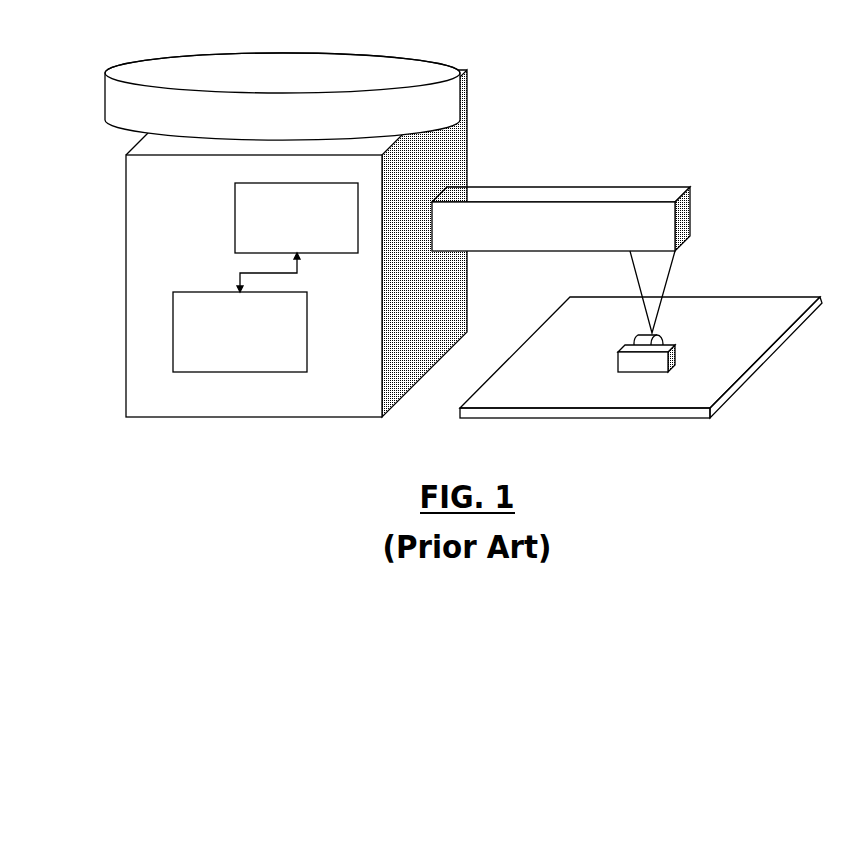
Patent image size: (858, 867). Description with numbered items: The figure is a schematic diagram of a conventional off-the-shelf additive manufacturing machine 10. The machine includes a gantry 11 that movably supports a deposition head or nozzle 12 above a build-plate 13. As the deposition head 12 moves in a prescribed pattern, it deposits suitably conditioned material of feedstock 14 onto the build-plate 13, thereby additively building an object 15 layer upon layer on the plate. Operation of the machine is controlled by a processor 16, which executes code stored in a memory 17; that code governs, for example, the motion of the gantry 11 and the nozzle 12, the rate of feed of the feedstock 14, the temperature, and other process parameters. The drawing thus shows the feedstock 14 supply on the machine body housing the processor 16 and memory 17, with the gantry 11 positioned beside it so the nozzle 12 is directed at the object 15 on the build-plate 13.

The additive manufacturing machine 10 is at (163, 220).
The gantry 11 is at (537, 242).
The deposition head or nozzle 12 is at (667, 287).
The build-plate 13 is at (517, 392).
The feedstock 14 is at (297, 87).
The object 15 is at (677, 358).
The processor 16 is at (225, 360).
The memory 17 is at (282, 247).